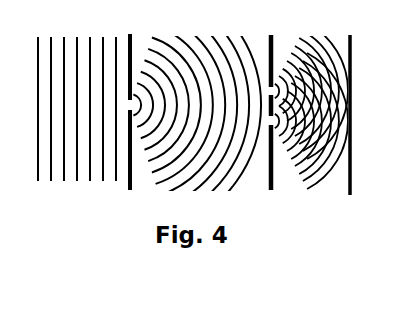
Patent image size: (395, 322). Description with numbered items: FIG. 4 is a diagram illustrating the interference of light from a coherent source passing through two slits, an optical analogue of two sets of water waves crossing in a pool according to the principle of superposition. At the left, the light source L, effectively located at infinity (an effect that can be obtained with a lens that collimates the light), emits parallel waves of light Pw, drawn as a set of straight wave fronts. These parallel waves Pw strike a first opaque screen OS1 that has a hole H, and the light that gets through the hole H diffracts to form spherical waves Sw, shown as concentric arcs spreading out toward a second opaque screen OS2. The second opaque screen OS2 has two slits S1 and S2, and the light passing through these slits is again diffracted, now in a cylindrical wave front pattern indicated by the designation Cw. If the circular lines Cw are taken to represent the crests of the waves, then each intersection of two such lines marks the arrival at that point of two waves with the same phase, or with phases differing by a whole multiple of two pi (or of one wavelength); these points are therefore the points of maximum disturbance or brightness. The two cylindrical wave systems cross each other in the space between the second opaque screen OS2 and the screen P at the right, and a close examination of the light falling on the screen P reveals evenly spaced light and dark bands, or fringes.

The light source L is at (28, 109).
The parallel waves of light Pw is at (83, 95).
The opaque screen OS1 is at (128, 124).
The hole H is at (128, 111).
The spherical waves Sw is at (199, 115).
The second opaque screen OS2 is at (271, 125).
The slit S1 is at (265, 134).
The slit S2 is at (265, 87).
The cylindrical wave front pattern Cw is at (313, 102).
The screen P is at (348, 125).